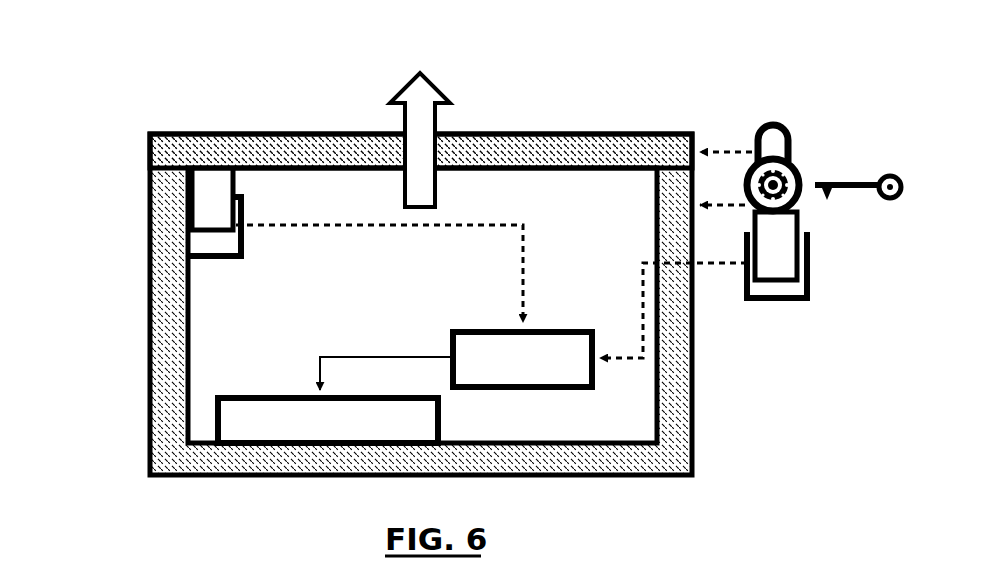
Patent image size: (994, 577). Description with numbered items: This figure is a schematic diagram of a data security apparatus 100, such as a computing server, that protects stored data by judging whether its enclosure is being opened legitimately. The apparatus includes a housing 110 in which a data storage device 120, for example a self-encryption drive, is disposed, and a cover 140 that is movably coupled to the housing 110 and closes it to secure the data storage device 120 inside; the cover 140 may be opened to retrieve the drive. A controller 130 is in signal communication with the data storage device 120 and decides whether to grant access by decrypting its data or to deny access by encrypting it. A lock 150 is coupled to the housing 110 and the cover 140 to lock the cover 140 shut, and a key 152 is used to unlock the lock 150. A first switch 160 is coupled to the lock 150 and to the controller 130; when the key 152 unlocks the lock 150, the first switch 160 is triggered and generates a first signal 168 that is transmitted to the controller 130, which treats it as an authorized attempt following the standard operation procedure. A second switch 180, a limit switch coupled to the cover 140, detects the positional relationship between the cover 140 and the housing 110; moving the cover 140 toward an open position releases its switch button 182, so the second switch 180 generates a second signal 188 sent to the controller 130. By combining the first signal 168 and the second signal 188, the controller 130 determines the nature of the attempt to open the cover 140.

The data security apparatus 100 is at (222, 77).
The housing 110 is at (150, 428).
The data storage device 120 is at (237, 413).
The controller 130 is at (558, 348).
The cover 140 is at (173, 148).
The lock 150 is at (806, 158).
The key 152 is at (833, 183).
The first switch 160 is at (807, 262).
The first signal 168 is at (698, 265).
The second switch 180 is at (200, 241).
The switch button 182 is at (197, 180).
The second signal 188 is at (303, 225).